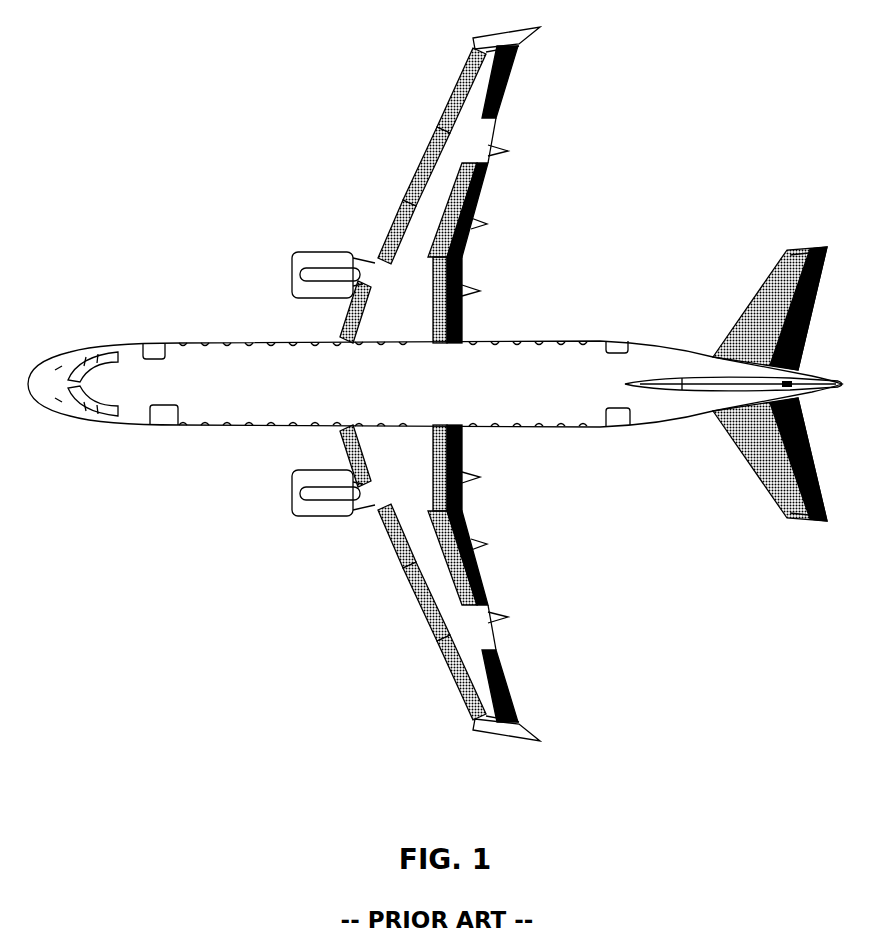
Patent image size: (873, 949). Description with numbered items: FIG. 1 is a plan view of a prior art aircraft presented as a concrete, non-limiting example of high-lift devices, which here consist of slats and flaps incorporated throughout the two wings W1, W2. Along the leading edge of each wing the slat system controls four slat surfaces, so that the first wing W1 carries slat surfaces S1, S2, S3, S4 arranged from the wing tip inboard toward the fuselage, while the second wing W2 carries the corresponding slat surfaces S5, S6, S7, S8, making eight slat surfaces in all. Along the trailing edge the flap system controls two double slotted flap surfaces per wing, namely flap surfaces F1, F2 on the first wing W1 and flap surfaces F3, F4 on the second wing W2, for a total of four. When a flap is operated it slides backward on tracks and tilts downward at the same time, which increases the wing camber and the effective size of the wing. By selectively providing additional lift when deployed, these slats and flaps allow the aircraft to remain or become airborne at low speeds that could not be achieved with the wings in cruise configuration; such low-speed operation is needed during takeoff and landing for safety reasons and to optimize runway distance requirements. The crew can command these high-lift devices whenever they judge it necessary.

The wing W1 is at (473, 83).
The wing W2 is at (479, 683).
The slat surface S1 is at (451, 100).
The slat surface S2 is at (420, 167).
The slat surface S3 is at (381, 233).
The slat surface S4 is at (340, 334).
The slat surface S5 is at (340, 432).
The slat surface S6 is at (384, 533).
The slat surface S7 is at (414, 597).
The slat surface S8 is at (447, 659).
The double slotted flap surface F1 is at (473, 168).
The double slotted flap surface F2 is at (463, 280).
The double slotted flap surface F3 is at (462, 489).
The double slotted flap surface F4 is at (471, 556).